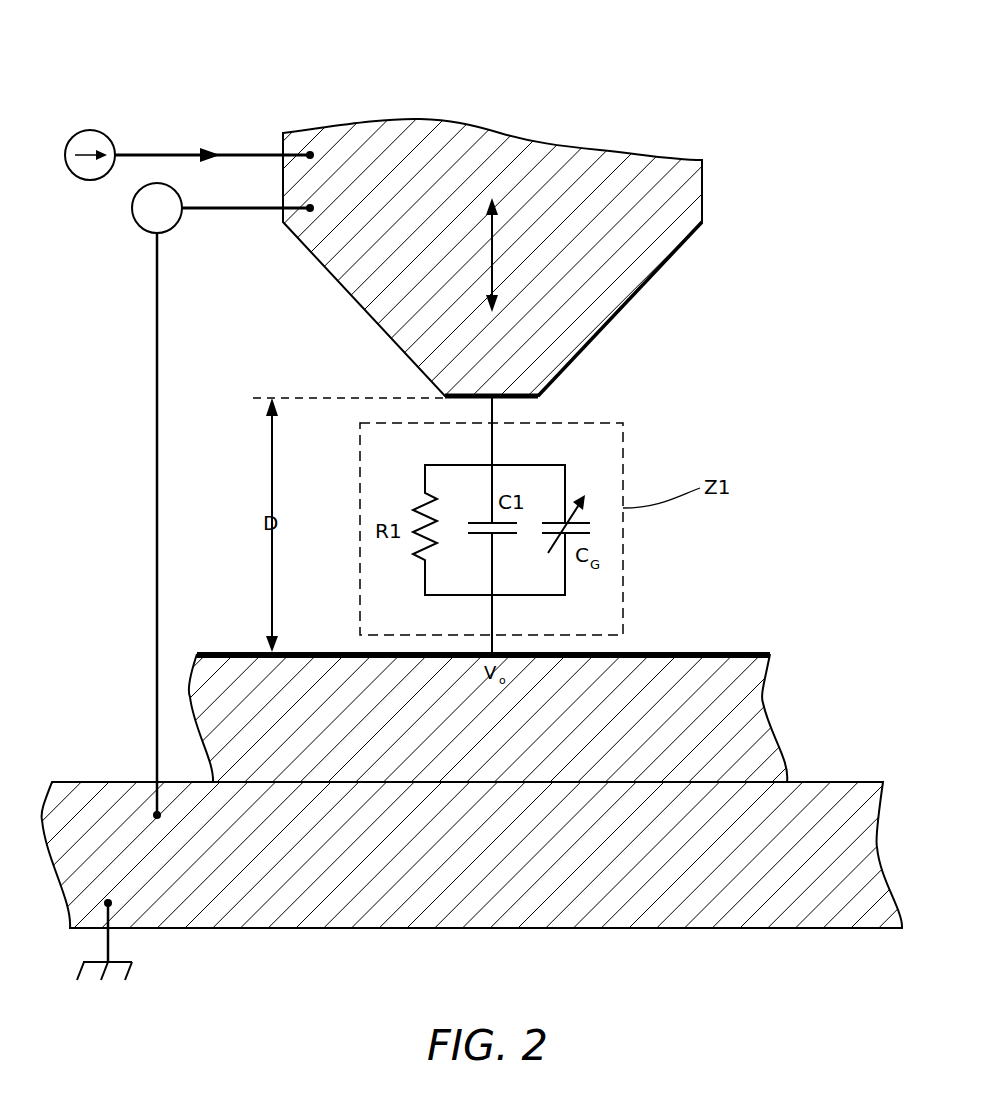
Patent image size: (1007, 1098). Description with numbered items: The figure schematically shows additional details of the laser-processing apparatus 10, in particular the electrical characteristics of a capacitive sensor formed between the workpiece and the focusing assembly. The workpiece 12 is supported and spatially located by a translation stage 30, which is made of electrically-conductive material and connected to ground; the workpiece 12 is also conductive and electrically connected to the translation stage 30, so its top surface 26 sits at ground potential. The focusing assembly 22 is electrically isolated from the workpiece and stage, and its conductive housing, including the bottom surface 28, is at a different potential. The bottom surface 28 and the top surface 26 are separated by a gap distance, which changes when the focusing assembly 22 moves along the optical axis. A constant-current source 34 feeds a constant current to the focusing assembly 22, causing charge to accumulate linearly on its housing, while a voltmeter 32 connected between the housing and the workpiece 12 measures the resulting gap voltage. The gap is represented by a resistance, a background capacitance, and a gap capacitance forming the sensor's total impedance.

The laser-processing apparatus 10 is at (790, 133).
The workpiece 12 is at (714, 662).
The focusing assembly 22 is at (663, 250).
The top surface 26 is at (772, 656).
The bottom surface 28 is at (540, 398).
The translation stage 30 is at (843, 787).
The voltmeter 32 is at (133, 216).
The constant-current source 34 is at (87, 130).